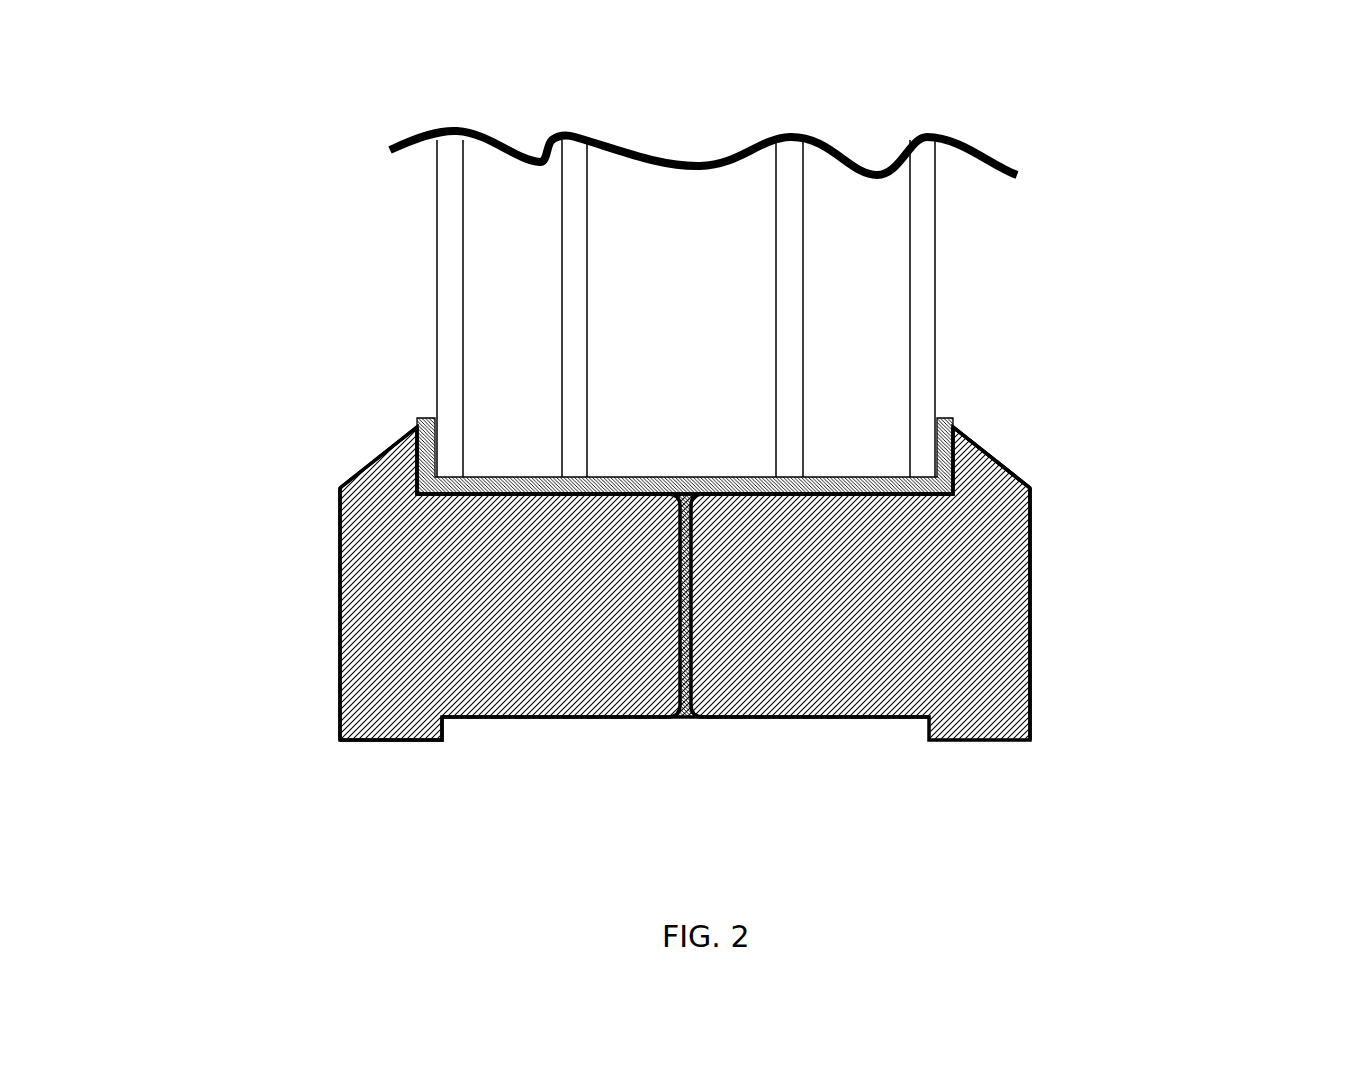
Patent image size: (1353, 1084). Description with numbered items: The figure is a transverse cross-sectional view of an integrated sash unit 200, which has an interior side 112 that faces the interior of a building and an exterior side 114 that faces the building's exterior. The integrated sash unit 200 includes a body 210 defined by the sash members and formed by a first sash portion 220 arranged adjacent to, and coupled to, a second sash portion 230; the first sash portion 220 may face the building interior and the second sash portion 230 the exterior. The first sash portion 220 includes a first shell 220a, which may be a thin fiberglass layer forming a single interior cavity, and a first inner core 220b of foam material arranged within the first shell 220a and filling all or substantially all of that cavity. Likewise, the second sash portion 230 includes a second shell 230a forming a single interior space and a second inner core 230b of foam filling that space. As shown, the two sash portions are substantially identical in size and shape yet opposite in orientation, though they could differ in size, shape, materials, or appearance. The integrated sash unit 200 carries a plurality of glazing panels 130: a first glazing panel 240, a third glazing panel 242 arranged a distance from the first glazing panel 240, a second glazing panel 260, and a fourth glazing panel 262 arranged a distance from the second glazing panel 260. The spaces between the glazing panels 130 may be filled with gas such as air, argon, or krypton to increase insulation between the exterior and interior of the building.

The integrated sash unit 200 is at (268, 84).
The glazing panels 130 is at (522, 95).
The interior side 112 is at (1062, 457).
The exterior side 114 is at (300, 732).
The body 210 is at (283, 450).
The first sash portion 220 is at (401, 583).
The first shell 220a is at (342, 543).
The first inner core 220b is at (418, 627).
The second sash portion 230 is at (963, 598).
The second shell 230a is at (1030, 557).
The second inner core 230b is at (978, 650).
The first glazing panel 240 is at (435, 260).
The third glazing panel 242 is at (593, 255).
The second glazing panel 260 is at (937, 283).
The fourth glazing panel 262 is at (805, 227).